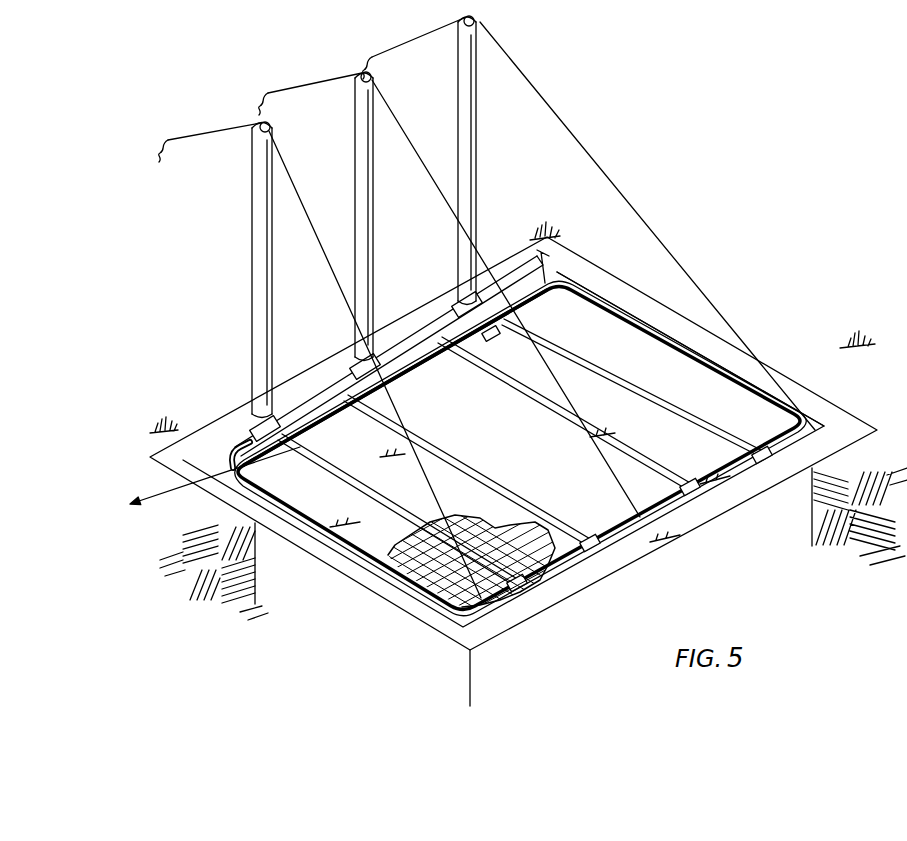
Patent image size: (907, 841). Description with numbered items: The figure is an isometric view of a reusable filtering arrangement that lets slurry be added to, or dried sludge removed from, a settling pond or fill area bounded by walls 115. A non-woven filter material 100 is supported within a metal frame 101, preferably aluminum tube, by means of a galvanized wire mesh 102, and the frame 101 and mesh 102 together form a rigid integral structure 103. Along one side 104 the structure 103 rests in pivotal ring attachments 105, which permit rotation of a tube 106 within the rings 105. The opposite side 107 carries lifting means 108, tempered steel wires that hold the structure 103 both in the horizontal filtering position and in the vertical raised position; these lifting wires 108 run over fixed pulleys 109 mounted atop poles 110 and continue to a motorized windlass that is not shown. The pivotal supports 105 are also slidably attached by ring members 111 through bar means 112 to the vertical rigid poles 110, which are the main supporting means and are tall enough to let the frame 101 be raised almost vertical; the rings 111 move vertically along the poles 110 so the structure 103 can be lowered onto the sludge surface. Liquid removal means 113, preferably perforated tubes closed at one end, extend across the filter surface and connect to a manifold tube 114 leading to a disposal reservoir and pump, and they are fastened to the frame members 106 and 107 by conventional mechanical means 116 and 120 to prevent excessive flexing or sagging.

The non-woven filter material 100 is at (372, 380).
The metal frame 101 is at (670, 338).
The mesh 102 is at (577, 585).
The rigid integral structure 103 is at (748, 372).
The side 104 is at (548, 240).
The pivotal ring attachments 105 is at (483, 290).
The tube 106 is at (247, 460).
The opposite side 107 is at (633, 530).
The lifting means 108 is at (626, 200).
The fixed pulleys 109 is at (274, 128).
The poles 110 is at (253, 204).
The ring members 111 is at (455, 298).
The bar means 112 is at (425, 345).
The liquid removal means 113 is at (630, 388).
The manifold tube 114 is at (437, 370).
The walls 115 is at (785, 385).
The conventional mechanical means 116 is at (488, 340).
The conventional mechanical means 120 is at (525, 590).